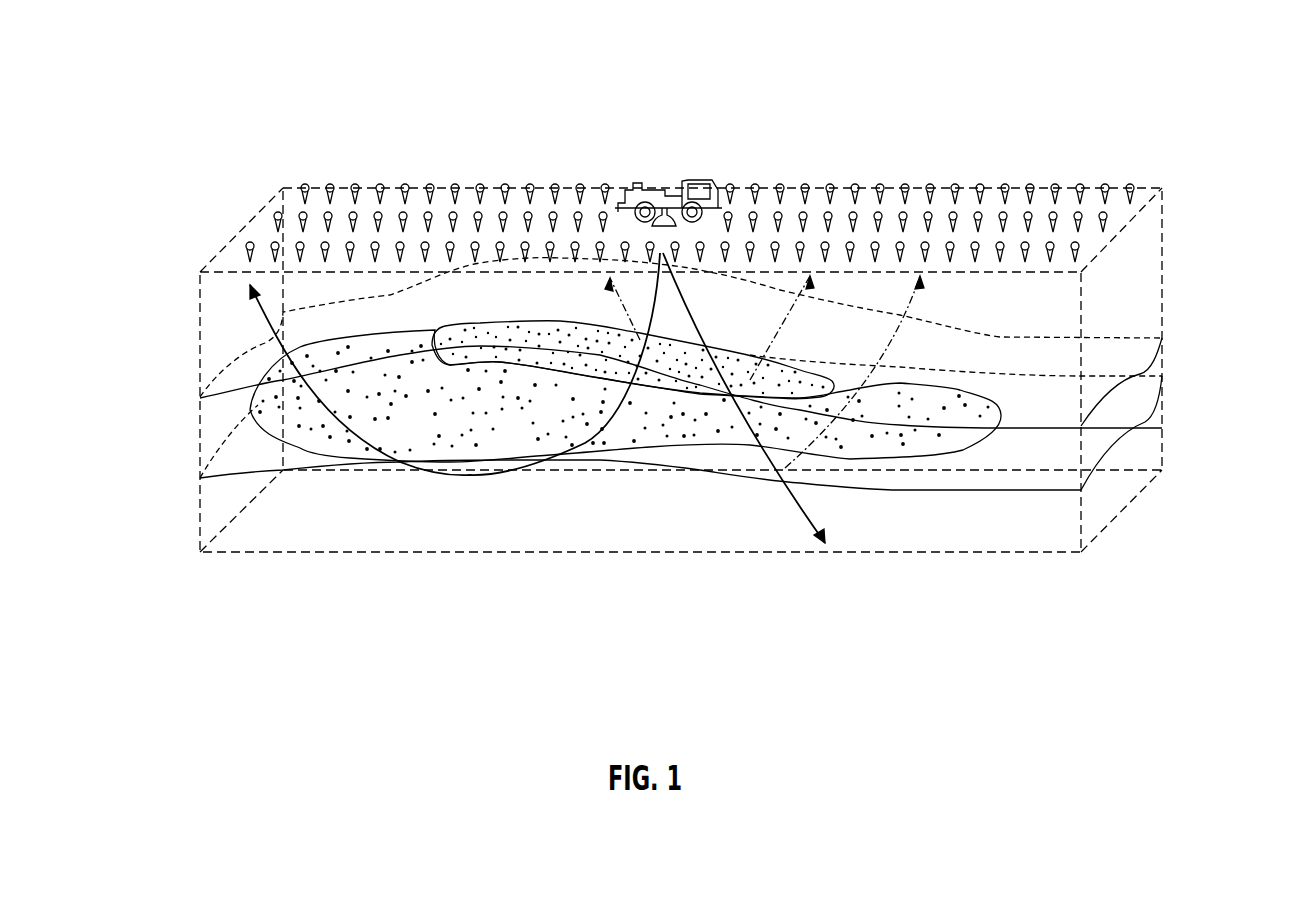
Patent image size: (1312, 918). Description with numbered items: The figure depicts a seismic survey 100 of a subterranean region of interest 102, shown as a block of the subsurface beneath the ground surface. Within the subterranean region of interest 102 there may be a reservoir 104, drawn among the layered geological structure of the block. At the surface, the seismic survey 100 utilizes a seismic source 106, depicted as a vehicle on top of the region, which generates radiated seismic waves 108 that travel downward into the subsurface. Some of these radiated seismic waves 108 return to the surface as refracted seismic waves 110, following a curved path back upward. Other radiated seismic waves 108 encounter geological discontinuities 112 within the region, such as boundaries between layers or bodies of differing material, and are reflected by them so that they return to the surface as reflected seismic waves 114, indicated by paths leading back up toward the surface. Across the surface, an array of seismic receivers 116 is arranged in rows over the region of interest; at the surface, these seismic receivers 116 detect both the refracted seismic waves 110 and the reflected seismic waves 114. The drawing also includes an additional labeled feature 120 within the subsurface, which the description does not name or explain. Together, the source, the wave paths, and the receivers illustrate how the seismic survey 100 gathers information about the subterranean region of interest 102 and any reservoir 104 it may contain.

The seismic survey 100 is at (1173, 84).
The subterranean region of interest 102 is at (947, 550).
The reservoir 104 is at (920, 407).
The seismic source 106 is at (670, 176).
The radiated seismic waves 108 is at (797, 520).
The refracted seismic waves 110 is at (356, 440).
The geological discontinuities 112 is at (275, 388).
The reflected seismic waves 114 is at (797, 323).
The seismic receivers 116 is at (933, 186).
The mineral deposit 120 is at (462, 325).